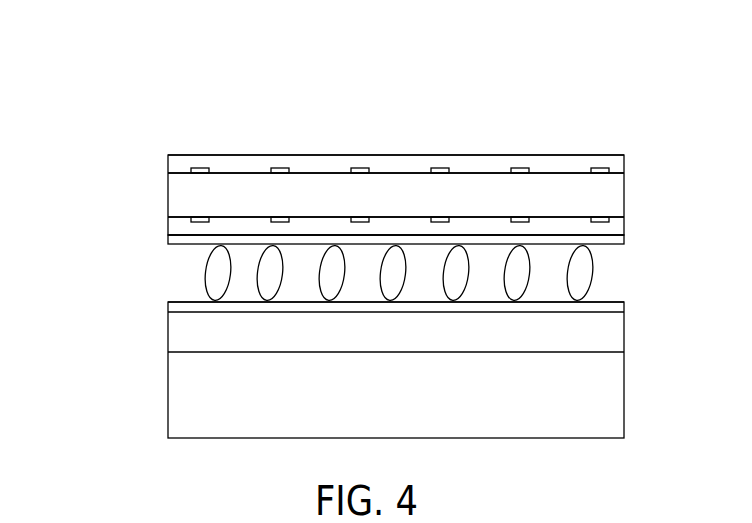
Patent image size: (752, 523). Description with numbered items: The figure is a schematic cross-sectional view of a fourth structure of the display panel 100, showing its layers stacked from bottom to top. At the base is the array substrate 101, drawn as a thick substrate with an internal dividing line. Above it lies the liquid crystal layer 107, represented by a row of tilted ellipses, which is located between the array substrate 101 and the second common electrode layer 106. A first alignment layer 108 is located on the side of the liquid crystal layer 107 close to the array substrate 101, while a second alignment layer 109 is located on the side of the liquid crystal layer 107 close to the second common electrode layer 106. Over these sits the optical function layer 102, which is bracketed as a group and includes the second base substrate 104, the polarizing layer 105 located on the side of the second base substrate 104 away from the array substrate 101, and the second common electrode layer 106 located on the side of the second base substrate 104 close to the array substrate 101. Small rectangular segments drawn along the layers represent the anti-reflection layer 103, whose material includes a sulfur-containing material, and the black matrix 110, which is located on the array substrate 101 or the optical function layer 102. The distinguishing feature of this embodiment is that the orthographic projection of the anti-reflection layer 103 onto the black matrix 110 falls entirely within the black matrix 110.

The display panel 100 is at (132, 79).
The array substrate 101 is at (118, 312).
The optical function layer 102 is at (92, 142).
The anti-reflection layer 103 is at (600, 170).
The second base substrate 104 is at (212, 200).
The polarizing layer 105 is at (208, 158).
The second common electrode layer 106 is at (210, 230).
The liquid crystal layer 107 is at (157, 247).
The first alignment layer 108 is at (596, 305).
The second alignment layer 109 is at (596, 241).
The black matrix 110 is at (604, 219).